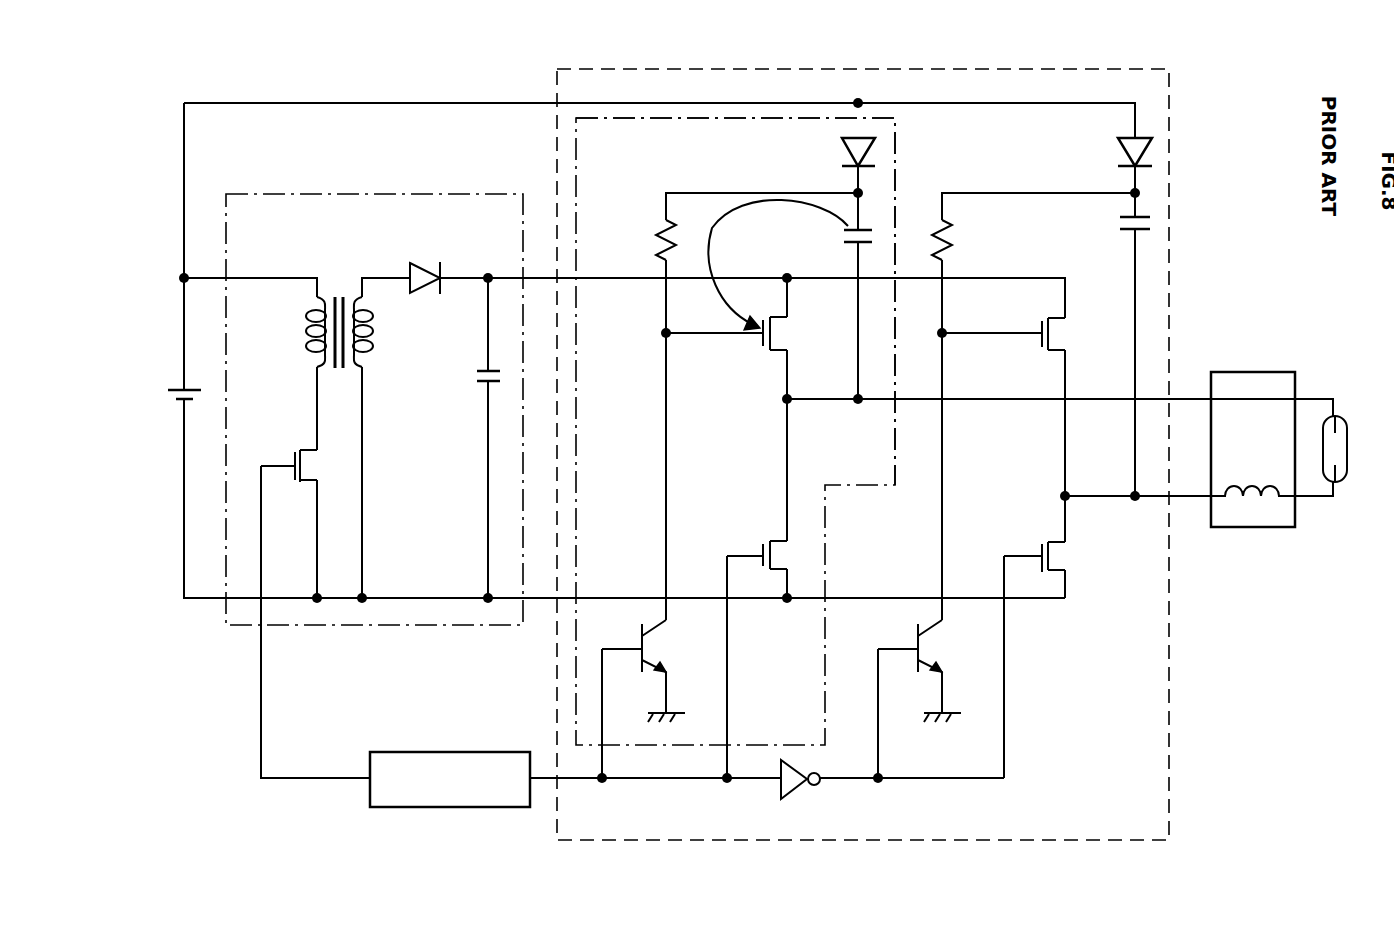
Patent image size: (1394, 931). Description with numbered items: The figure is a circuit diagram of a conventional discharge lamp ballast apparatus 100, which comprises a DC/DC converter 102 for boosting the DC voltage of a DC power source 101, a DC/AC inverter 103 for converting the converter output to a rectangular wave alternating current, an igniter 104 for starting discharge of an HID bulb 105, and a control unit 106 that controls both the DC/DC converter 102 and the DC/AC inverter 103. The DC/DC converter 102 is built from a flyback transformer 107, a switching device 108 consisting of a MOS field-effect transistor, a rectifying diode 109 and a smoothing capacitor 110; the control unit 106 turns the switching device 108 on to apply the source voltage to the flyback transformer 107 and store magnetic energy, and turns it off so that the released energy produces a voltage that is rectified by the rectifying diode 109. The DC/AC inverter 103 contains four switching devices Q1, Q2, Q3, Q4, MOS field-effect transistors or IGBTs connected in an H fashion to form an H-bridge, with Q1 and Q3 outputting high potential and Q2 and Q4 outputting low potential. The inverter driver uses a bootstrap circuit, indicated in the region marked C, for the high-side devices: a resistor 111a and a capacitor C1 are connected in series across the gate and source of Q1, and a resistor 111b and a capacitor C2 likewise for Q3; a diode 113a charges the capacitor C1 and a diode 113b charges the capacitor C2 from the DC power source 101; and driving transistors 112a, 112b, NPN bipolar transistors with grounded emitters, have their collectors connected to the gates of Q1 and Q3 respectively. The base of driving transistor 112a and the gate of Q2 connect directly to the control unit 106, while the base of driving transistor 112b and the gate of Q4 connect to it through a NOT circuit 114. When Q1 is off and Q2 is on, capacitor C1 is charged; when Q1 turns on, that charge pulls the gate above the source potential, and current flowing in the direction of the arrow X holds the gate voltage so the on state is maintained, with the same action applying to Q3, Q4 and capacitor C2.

The discharge lamp ballast apparatus 100 is at (477, 82).
The DC power source 101 is at (176, 384).
The DC/DC converter 102 is at (302, 194).
The DC/AC inverter 103 is at (993, 69).
The igniter 104 is at (1253, 372).
The HID bulb 105 is at (1342, 414).
The control unit 106 is at (450, 752).
The flyback transformer 107 is at (339, 295).
The switching device 108 is at (295, 452).
The rectifying diode 109 is at (427, 262).
The smoothing capacitor 110 is at (474, 378).
The resistor 111a is at (660, 228).
The resistor 111b is at (954, 250).
The driving transistor 112a is at (660, 652).
The driving transistor 112b is at (936, 652).
The diode 113a is at (842, 150).
The diode 113b is at (1118, 150).
The NOT circuit 114 is at (796, 788).
The gate drive circuit portion C is at (897, 150).
The capacitor C1 is at (842, 238).
The capacitor C2 is at (1118, 224).
The arrow X is at (705, 250).
The high-side switching device Q1 is at (783, 336).
The low-side switching device Q2 is at (775, 538).
The high-side switching device Q3 is at (1060, 336).
The low-side switching device Q4 is at (1060, 558).